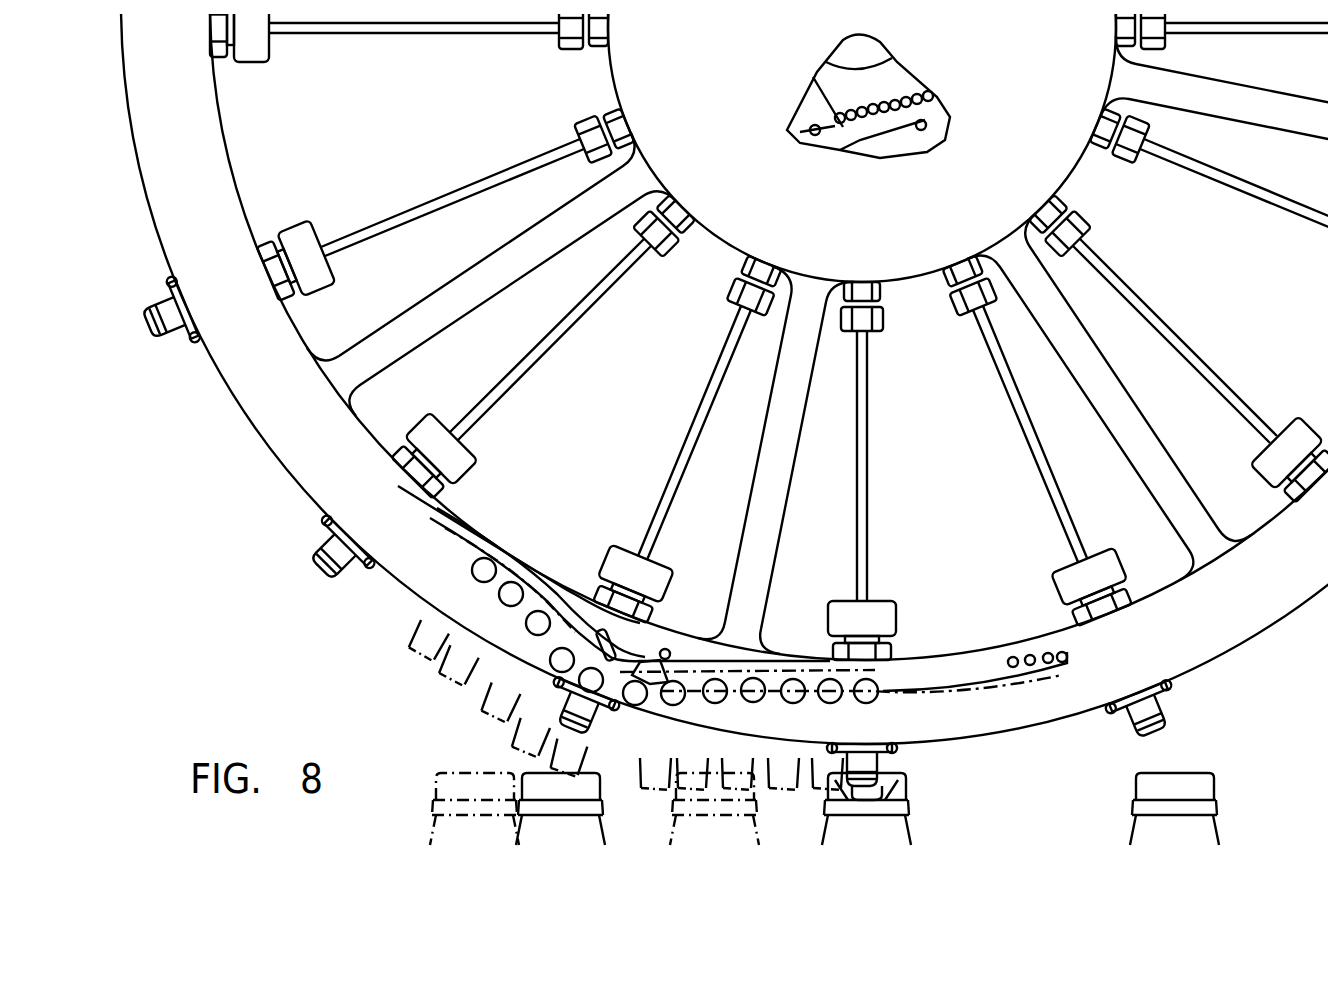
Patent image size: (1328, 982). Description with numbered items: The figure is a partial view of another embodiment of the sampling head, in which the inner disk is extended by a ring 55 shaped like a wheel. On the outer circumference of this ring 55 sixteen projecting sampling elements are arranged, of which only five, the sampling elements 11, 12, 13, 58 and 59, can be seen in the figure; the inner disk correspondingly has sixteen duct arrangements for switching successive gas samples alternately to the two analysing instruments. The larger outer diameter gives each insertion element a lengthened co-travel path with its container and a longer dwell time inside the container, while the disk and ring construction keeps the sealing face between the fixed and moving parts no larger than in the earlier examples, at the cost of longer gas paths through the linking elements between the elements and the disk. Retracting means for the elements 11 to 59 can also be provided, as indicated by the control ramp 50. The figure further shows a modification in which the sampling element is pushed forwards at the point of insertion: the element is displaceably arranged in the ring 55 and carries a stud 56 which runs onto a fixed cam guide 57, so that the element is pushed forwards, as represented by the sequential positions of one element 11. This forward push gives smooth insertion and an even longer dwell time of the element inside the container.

The projecting sampling element 11 is at (627, 737).
The projecting sampling element 12 is at (343, 555).
The projecting sampling element 13 is at (181, 328).
The control ramp 50 is at (841, 142).
The ring 55 is at (991, 655).
The stud 56 is at (493, 560).
The fixed cam guide 57 is at (552, 580).
The projecting sampling element 58 is at (880, 762).
The projecting sampling element 59 is at (1143, 716).